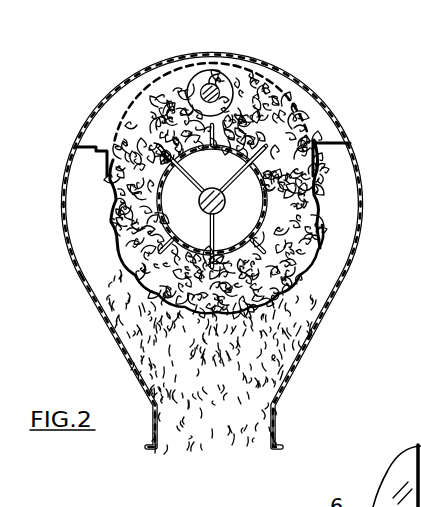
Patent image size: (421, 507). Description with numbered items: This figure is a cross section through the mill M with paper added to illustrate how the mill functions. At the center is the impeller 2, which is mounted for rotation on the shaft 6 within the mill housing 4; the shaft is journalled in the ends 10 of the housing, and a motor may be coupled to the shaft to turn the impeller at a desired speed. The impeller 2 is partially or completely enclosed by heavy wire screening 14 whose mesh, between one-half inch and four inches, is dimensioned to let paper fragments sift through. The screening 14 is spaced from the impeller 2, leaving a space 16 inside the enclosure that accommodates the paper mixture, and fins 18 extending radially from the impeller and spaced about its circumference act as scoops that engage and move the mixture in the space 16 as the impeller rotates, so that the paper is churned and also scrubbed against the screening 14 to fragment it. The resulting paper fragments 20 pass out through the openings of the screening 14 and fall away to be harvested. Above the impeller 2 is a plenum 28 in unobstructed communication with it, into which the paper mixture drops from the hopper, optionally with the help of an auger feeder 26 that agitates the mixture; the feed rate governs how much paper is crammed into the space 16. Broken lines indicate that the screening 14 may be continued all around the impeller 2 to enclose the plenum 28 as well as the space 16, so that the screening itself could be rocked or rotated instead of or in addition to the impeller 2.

The impeller 2 is at (262, 221).
The mill housing 4 is at (276, 416).
The shaft 6 is at (200, 209).
The ends of the housing 10 is at (408, 460).
The wire screening 14 is at (152, 85).
The space 16 is at (290, 285).
The fins 18 is at (292, 106).
The paper fragments 20 is at (208, 425).
The auger feeder 26 is at (207, 72).
The plenum 28 is at (242, 83).
The mill M is at (68, 123).